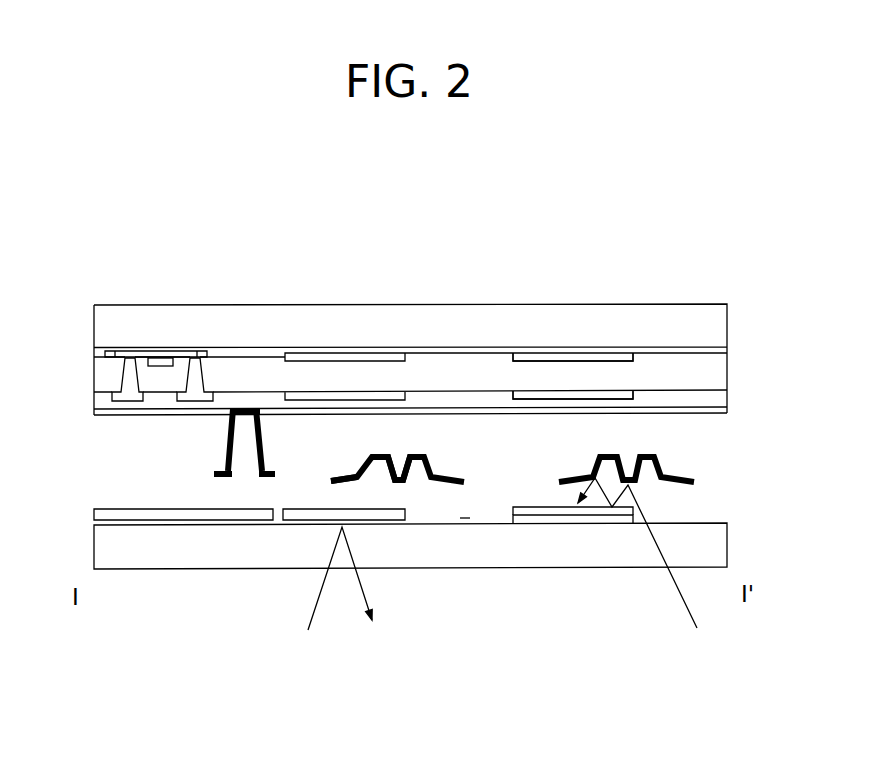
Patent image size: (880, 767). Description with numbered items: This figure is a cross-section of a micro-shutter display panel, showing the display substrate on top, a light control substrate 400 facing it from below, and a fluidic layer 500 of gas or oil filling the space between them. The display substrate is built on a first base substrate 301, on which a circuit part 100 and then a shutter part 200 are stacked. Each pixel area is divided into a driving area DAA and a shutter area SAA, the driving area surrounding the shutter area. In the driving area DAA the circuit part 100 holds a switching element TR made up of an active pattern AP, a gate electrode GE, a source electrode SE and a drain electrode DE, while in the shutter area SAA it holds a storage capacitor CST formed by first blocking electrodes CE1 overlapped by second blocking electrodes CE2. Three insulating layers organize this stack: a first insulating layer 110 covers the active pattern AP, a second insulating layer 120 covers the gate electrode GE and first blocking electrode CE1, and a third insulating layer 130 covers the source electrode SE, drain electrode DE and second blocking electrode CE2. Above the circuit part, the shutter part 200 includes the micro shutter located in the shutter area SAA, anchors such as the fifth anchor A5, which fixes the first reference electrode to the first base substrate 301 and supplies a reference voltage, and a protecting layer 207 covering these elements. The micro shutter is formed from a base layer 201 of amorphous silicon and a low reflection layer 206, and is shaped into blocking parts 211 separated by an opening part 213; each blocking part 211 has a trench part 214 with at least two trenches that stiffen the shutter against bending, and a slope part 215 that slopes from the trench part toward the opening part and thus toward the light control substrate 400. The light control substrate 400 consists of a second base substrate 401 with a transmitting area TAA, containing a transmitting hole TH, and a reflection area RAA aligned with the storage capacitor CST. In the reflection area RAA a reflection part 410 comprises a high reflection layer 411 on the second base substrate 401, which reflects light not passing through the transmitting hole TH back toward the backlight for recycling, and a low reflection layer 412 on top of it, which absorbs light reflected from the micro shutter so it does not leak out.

The first base substrate 301 is at (722, 320).
The circuit part 100 is at (735, 352).
The first insulating layer 110 is at (250, 351).
The second insulating layer 120 is at (100, 373).
The third insulating layer 130 is at (100, 402).
The protecting layer 207 is at (725, 410).
The switching element TR is at (223, 242).
The active pattern AP is at (115, 351).
The drain electrode DE is at (125, 357).
The gate electrode GE is at (160, 358).
The source electrode SE is at (196, 357).
The storage capacitor CST is at (620, 248).
The first blocking electrode CE1 is at (552, 352).
The second blocking electrode CE2 is at (603, 391).
The fluidic layer 500 is at (88, 418).
The fifth anchor A5 is at (228, 443).
The shutter part 200 is at (732, 415).
The base layer 201 is at (347, 475).
The low reflection layer 206 is at (360, 479).
The blocking part 211 is at (358, 242).
The slope part 215 is at (352, 470).
The trench part 214 is at (427, 447).
The opening part 213 is at (558, 473).
The reflection part 410 is at (95, 520).
The second base substrate 401 is at (95, 545).
The light control substrate 400 is at (732, 520).
The high reflection layer 411 is at (553, 520).
The low reflection layer 412 is at (603, 512).
The transmitting hole TH is at (463, 518).
The driving area DAA is at (273, 684).
The shutter area SAA is at (728, 660).
The transmitting area TAA is at (513, 643).
The reflection area RAA is at (635, 622).